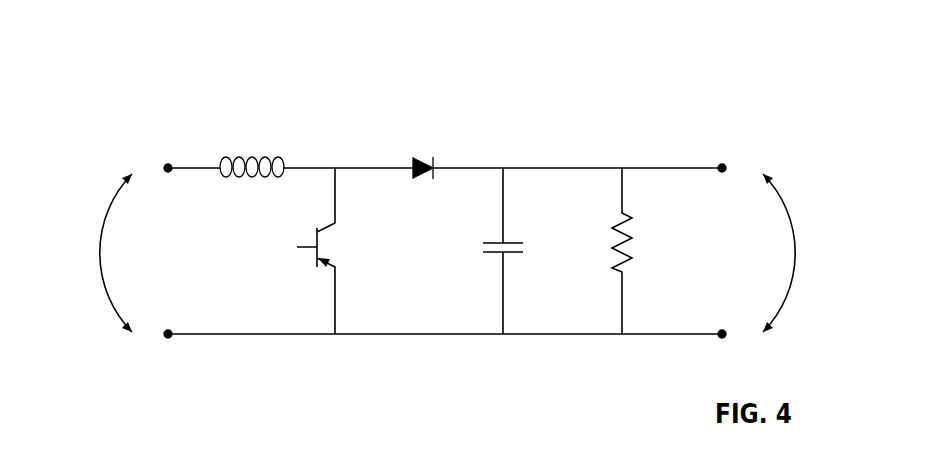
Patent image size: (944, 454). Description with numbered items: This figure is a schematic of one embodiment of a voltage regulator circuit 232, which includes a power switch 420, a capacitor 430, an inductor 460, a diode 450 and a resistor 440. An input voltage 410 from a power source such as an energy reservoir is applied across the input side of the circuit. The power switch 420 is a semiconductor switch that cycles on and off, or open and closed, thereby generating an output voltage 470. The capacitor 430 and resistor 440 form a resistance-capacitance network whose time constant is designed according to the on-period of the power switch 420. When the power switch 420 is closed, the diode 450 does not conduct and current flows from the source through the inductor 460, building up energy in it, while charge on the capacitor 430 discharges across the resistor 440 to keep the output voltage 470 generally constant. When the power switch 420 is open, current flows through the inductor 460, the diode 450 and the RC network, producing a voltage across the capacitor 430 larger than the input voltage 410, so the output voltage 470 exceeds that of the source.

The power converter circuit 232 is at (192, 102).
The input voltage 410 is at (90, 262).
The power switch 420 is at (323, 277).
The capacitor 430 is at (492, 258).
The resistor 440 is at (638, 245).
The diode 450 is at (430, 155).
The inductor 460 is at (258, 157).
The output voltage 470 is at (808, 243).